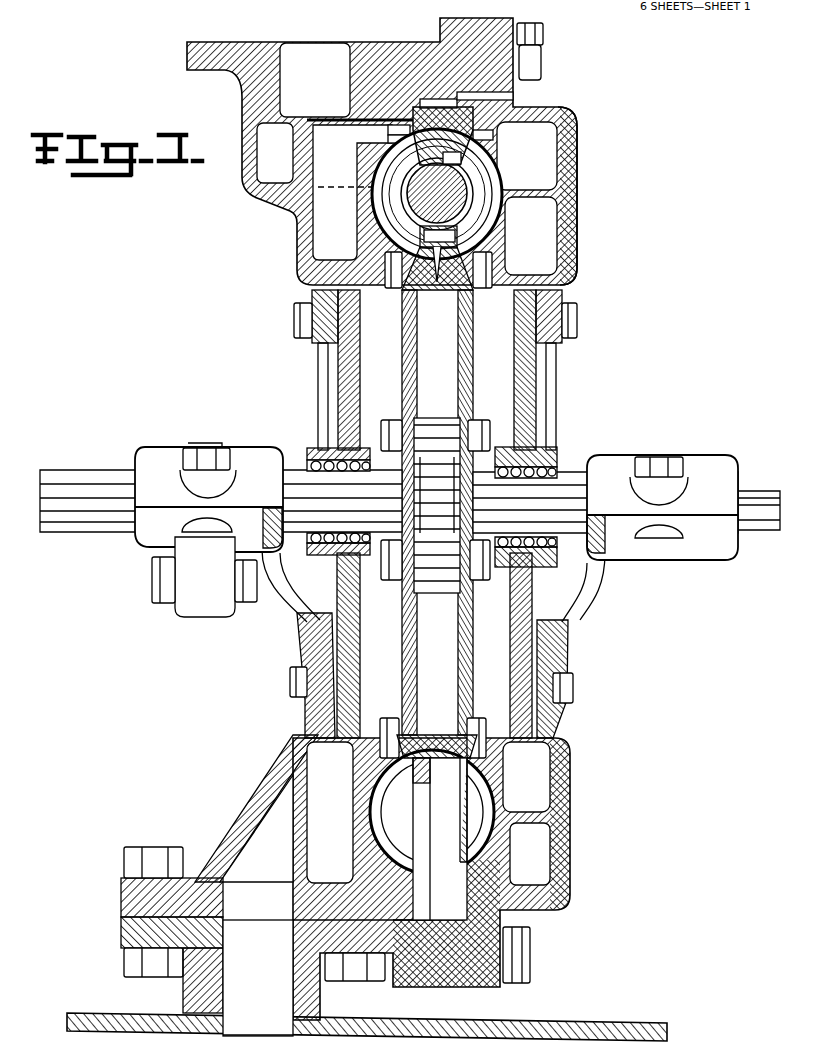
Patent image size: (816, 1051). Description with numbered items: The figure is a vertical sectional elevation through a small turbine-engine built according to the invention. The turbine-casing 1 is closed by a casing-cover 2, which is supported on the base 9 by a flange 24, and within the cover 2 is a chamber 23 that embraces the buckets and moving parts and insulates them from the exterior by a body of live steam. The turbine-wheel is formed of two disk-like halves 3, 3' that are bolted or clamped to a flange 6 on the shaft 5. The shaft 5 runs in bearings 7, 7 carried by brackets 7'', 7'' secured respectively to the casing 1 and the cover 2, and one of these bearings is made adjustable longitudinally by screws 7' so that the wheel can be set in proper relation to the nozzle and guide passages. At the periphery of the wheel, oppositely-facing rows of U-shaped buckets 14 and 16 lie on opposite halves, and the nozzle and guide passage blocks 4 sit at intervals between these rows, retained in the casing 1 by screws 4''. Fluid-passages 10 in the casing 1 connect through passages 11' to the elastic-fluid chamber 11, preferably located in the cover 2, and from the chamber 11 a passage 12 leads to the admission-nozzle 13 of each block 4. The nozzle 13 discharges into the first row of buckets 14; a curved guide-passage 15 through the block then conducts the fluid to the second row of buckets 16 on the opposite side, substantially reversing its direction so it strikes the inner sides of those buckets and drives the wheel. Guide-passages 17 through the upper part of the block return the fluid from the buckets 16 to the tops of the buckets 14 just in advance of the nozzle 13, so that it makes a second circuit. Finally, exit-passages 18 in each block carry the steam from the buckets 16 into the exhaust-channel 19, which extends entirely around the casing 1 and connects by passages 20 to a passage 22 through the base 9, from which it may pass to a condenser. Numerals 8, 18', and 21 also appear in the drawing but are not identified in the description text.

The turbine-casing 1 is at (440, 32).
The casing-cover 2 is at (546, 28).
The half of turbine-wheel 3 is at (396, 512).
The half of turbine-wheel 3' is at (478, 512).
The nozzle and guide passage block 4 is at (449, 194).
The screws 4'' is at (371, 91).
The shaft 5 is at (117, 507).
The flange 6 is at (432, 420).
The bearings 7 is at (436, 492).
The screws 7' is at (204, 577).
The brackets 7'' is at (431, 514).
The ball bearing 8 is at (560, 473).
The base 9 is at (110, 1013).
The fluid-passages 10 is at (312, 65).
The elastic-fluid chamber or passage 11 is at (557, 496).
The passages 11' is at (275, 153).
The passage 12 is at (492, 141).
The admission-nozzle 13 is at (490, 135).
The first row of buckets 14 is at (393, 223).
The guide-passage 15 is at (440, 238).
The second row of buckets 16 is at (480, 220).
The guide-passages 17 is at (466, 158).
The exit-passages 18 is at (361, 192).
The shim 18' is at (366, 150).
The exhaust-channel 19 is at (327, 225).
The passages 20 is at (382, 877).
The cap 21 is at (473, 91).
The passage 22 is at (221, 980).
The chamber 23 is at (550, 230).
The flange 24 is at (127, 933).